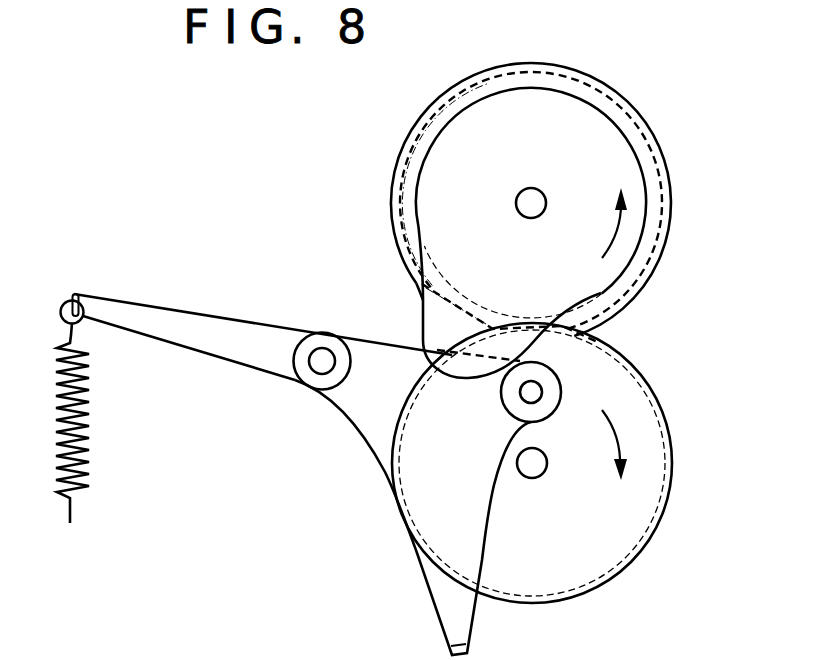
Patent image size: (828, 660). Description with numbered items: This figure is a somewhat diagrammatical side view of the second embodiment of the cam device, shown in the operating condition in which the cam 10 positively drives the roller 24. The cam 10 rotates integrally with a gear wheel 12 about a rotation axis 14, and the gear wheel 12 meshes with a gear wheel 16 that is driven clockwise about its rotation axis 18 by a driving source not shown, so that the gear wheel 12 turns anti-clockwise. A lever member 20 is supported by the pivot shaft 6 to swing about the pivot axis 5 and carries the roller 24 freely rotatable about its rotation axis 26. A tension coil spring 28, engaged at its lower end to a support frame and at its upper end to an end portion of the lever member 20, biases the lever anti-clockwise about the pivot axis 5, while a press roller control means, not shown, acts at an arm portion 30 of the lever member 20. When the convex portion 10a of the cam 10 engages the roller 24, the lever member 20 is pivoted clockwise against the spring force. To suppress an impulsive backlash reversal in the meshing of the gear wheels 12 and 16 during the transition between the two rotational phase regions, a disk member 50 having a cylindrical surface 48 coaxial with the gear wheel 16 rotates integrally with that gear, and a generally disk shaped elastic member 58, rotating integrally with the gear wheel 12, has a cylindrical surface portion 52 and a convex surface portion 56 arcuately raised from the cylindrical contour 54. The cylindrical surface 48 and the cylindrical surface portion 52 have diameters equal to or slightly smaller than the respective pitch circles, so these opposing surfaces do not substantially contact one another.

The pivot axis 5 is at (322, 361).
The pivot shaft 6 is at (320, 373).
The cam 10 is at (514, 220).
The convex portion 10a is at (422, 330).
The gear wheel 12 is at (573, 203).
The rotation axis 14 is at (535, 207).
The gear wheel 16 is at (564, 460).
The rotation axis 18 is at (534, 468).
The lever member 20 is at (296, 450).
The roller 24 is at (518, 404).
The rotation axis 26 is at (530, 392).
The tension coil spring 28 is at (95, 408).
The arm portion 30 is at (433, 583).
The cylindrical surface 48 is at (625, 363).
The disk member 50 is at (637, 410).
The cylindrical surface portion 52 is at (648, 262).
The cylindrical contour 54 is at (444, 290).
The convex surface portion 56 is at (416, 278).
The elastic member 58 is at (405, 183).